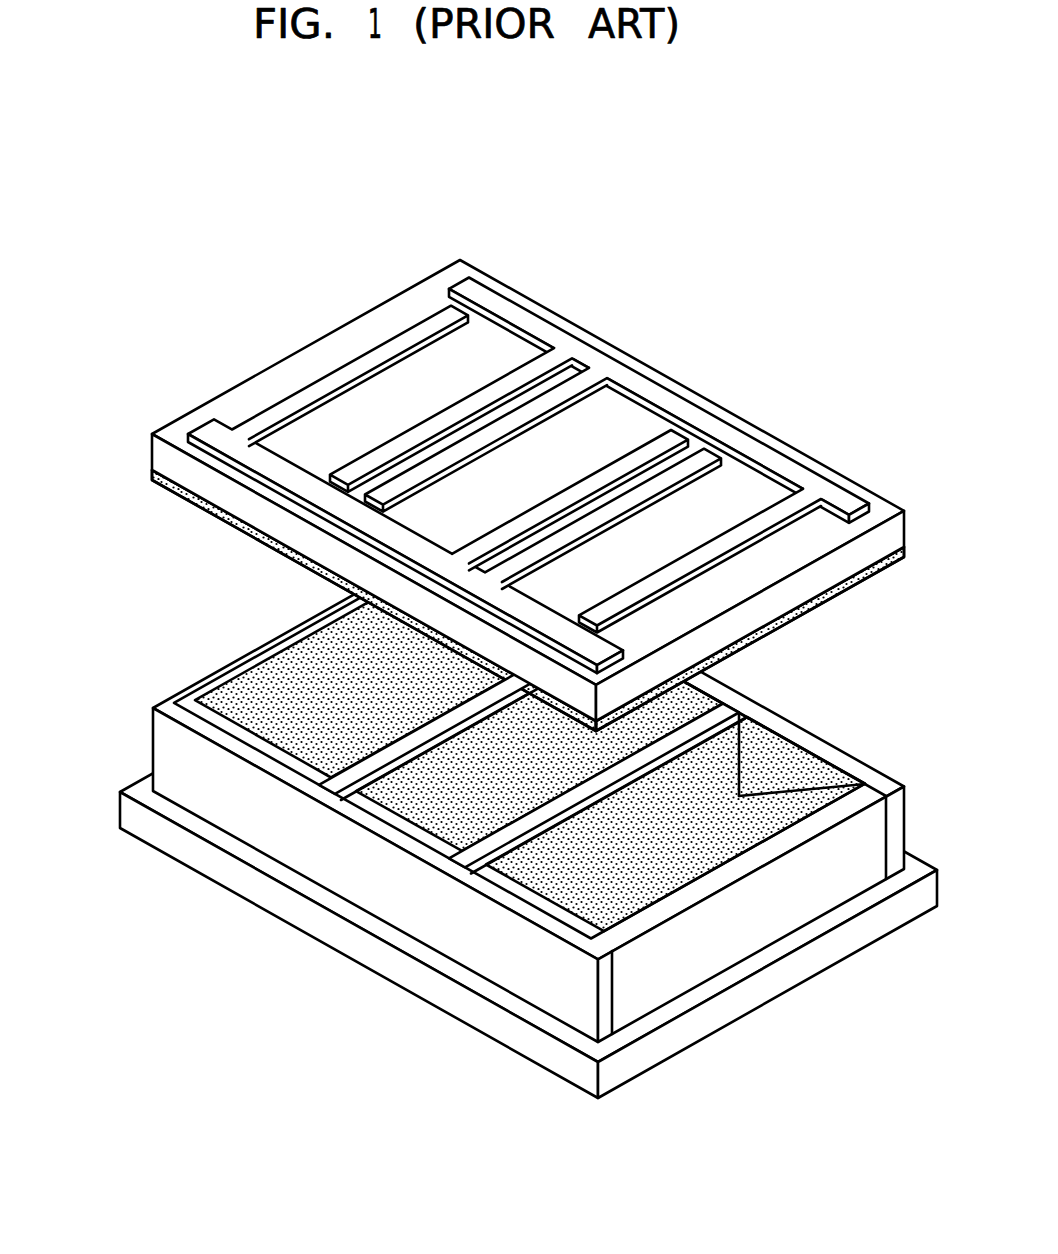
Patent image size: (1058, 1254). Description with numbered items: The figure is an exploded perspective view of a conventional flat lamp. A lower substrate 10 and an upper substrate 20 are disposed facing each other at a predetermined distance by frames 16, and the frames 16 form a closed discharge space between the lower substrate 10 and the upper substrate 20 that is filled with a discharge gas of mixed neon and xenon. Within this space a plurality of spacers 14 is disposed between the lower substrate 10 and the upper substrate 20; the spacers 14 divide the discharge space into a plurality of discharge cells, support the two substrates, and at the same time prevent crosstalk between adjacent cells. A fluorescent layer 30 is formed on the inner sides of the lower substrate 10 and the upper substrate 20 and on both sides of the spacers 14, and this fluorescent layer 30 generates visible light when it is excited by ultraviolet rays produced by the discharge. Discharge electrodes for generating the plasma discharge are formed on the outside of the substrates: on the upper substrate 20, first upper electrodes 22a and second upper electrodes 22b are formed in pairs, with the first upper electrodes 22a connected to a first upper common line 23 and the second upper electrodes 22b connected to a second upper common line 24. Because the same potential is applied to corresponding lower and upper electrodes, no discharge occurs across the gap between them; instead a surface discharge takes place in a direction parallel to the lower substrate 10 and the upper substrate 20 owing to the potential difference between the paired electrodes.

The lower substrate 10 is at (125, 812).
The spacers 14 is at (462, 868).
The frames 16 is at (162, 748).
The upper substrate 20 is at (157, 447).
The first upper electrodes 22a is at (597, 375).
The second upper electrodes 22b is at (443, 312).
The first upper common line 23 is at (496, 295).
The second upper common line 24 is at (205, 430).
The fluorescent layer 30 is at (155, 473).